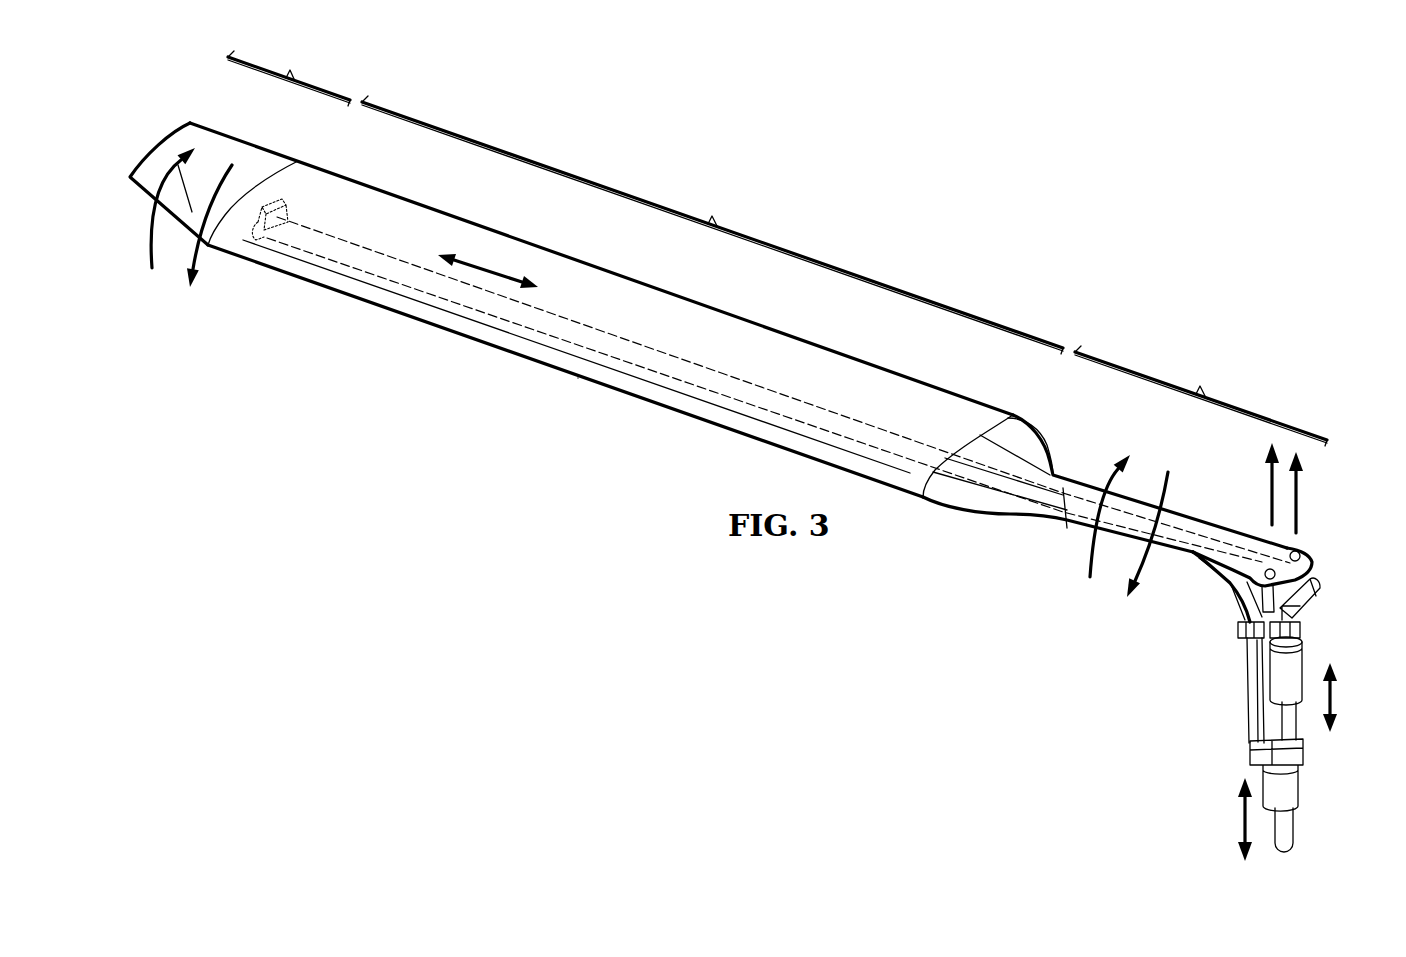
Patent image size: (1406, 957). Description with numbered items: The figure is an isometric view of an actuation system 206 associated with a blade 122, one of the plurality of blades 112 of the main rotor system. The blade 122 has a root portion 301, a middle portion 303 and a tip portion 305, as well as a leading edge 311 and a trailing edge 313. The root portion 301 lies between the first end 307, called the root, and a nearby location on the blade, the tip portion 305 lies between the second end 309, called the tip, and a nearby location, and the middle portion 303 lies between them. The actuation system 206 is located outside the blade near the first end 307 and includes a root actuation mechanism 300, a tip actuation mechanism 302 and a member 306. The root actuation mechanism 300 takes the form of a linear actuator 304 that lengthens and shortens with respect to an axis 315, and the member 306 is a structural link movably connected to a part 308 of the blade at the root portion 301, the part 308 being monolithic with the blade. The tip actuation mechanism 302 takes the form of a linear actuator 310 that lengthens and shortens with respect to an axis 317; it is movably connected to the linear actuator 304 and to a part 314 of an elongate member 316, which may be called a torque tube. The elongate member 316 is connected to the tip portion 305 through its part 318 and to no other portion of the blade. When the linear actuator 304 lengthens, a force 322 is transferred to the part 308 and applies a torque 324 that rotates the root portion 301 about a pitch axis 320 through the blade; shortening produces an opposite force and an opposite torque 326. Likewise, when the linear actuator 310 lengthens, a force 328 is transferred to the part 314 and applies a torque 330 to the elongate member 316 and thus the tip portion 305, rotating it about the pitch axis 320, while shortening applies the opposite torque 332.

The plurality of blades 112 is at (452, 215).
The blade 122 is at (582, 272).
The actuation system 206 is at (1172, 732).
The root actuation mechanism 300 is at (1314, 817).
The root portion 301 is at (1201, 396).
The tip actuation mechanism 302 is at (1316, 646).
The middle portion 303 is at (712, 225).
The linear actuator 304 is at (1300, 780).
The tip portion 305 is at (289, 74).
The member 306 is at (1243, 697).
The first end 307 is at (1313, 567).
The part 308 is at (1232, 613).
The second end 309 is at (135, 163).
The linear actuator 310 is at (1283, 665).
The leading edge 311 is at (578, 378).
The trailing edge 313 is at (657, 288).
The part 314 is at (1333, 601).
The axis 315 is at (1247, 820).
The elongate member 316 is at (380, 246).
The axis 317 is at (1334, 692).
The part 318 is at (228, 250).
The pitch axis 320 is at (504, 266).
The force 322 is at (1270, 490).
The torque 324 is at (1087, 560).
The torque 326 is at (1166, 472).
The force 328 is at (1300, 500).
The torque 330 is at (152, 262).
The torque 332 is at (217, 173).